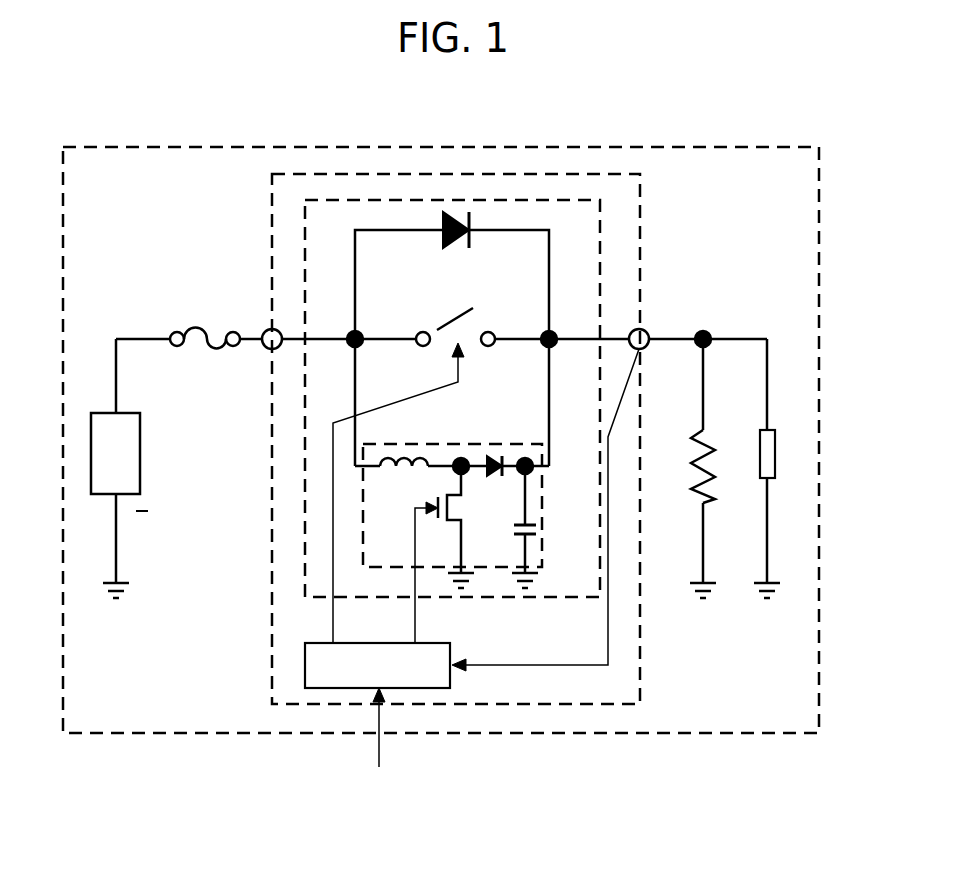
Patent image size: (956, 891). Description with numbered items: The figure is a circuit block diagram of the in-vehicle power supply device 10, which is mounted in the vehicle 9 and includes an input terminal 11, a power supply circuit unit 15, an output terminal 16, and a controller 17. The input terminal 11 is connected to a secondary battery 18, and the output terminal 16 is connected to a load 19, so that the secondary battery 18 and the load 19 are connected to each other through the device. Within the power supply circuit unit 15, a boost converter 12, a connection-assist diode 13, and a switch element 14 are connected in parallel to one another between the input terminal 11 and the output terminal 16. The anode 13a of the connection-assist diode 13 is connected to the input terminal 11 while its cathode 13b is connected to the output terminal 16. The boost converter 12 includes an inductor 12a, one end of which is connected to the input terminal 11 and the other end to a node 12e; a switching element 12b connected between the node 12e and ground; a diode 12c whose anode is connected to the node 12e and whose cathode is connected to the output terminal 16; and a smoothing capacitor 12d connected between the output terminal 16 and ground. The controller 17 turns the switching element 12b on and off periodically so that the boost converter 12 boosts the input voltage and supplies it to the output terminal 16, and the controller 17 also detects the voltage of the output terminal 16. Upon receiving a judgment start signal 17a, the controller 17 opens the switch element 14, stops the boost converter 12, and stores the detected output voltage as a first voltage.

The vehicle 9 is at (819, 662).
The in-vehicle power supply device 10 is at (603, 704).
The input terminal 11 is at (263, 325).
The boost converter 12 is at (460, 590).
The inductor 12a is at (387, 475).
The switching element 12b is at (432, 523).
The diode 12c is at (498, 458).
The smoothing capacitor 12d is at (533, 543).
The node 12e is at (457, 457).
The connection-assist diode 13 is at (391, 172).
The anode 13a is at (418, 228).
The cathode 13b is at (472, 227).
The switch element 14 is at (428, 330).
The power supply circuit unit 15 is at (602, 212).
The output terminal 16 is at (652, 327).
The controller 17 is at (429, 579).
The judgment start signal 17a is at (379, 749).
The secondary battery 18 is at (90, 443).
The load 19 is at (775, 467).